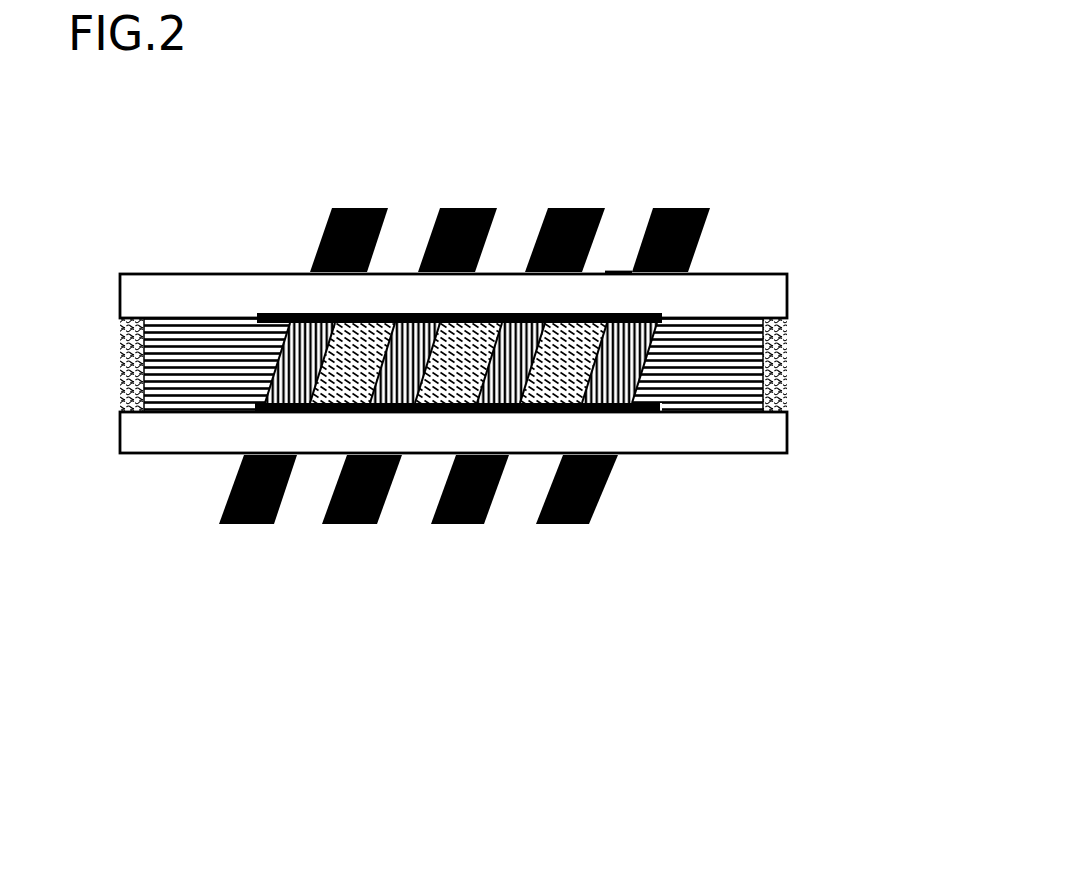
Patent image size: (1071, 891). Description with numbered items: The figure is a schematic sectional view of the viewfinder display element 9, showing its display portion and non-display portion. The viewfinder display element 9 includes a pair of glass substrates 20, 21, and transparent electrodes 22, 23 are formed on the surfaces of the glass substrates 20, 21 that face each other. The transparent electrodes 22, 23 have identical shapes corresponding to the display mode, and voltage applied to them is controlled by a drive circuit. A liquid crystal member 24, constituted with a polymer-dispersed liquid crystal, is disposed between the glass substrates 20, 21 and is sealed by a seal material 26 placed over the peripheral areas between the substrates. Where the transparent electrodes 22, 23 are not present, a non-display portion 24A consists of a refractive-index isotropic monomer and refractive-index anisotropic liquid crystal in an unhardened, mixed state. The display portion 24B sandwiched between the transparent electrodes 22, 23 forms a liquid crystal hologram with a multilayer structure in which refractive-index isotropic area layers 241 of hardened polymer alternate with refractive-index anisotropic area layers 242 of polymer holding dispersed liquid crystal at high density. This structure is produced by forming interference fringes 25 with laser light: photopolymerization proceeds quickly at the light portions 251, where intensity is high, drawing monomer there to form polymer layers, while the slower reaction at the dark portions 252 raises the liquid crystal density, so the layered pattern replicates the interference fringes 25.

The viewfinder display element 9 is at (64, 270).
The glass substrate 20 is at (690, 293).
The glass substrate 21 is at (693, 435).
The transparent electrode 22 is at (265, 325).
The transparent electrode 23 is at (269, 414).
The liquid crystal member 24 is at (453, 599).
The non-display portion 24A is at (685, 393).
The display portion 24B is at (456, 555).
The refractive-index isotropic area layer 241 is at (352, 360).
The refractive-index anisotropic area layer 242 is at (420, 405).
The interference fringes 25 is at (529, 277).
The light portion 251 is at (678, 151).
The dark portion 252 is at (677, 208).
The seal material 26 is at (120, 356).